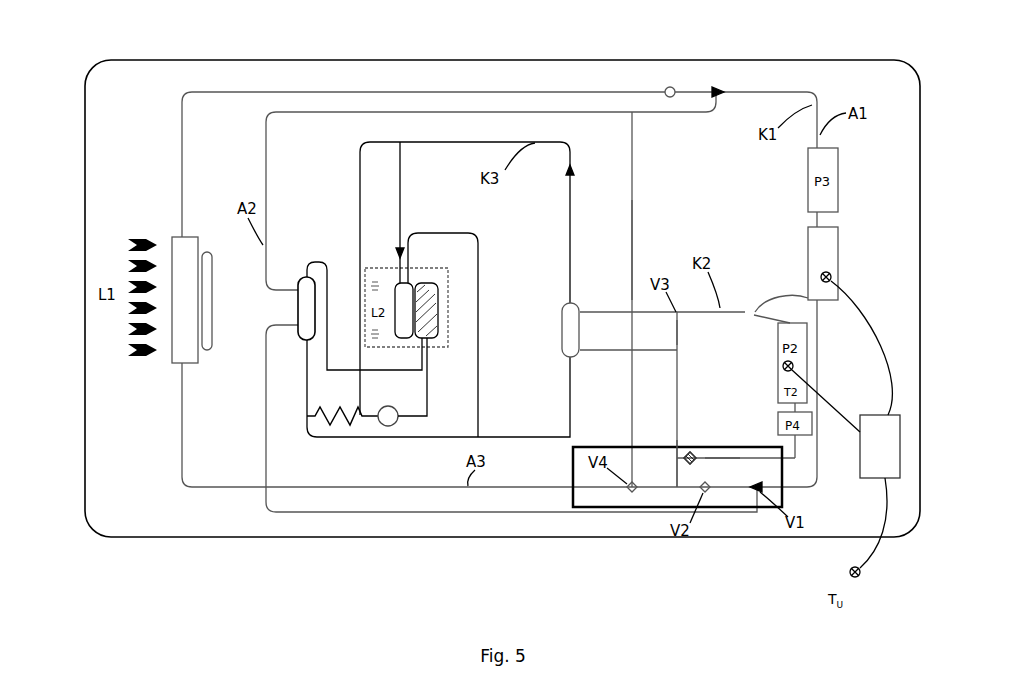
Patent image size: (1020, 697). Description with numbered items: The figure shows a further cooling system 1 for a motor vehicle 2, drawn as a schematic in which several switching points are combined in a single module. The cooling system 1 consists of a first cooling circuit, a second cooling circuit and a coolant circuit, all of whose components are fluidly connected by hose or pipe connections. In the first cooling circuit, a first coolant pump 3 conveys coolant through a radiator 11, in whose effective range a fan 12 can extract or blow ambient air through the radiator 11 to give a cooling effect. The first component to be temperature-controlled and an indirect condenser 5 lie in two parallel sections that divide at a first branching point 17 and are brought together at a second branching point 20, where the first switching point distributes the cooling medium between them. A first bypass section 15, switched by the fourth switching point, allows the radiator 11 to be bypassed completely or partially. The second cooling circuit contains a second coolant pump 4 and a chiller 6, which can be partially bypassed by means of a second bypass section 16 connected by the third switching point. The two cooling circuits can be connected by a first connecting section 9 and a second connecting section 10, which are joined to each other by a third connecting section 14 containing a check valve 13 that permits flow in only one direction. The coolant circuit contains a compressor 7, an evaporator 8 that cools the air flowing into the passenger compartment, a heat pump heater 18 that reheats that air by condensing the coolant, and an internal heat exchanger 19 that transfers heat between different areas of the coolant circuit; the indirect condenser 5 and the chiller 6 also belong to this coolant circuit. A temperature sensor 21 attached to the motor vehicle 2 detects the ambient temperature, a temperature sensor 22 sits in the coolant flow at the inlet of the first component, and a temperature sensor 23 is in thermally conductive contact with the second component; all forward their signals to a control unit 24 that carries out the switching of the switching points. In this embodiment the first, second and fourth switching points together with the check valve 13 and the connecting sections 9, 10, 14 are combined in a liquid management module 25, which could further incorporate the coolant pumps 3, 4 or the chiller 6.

The cooling system 1 is at (130, 86).
The motor vehicle 2 is at (152, 58).
The first coolant pump 3 is at (673, 86).
The second coolant pump 4 is at (835, 293).
The indirect condenser 5 is at (306, 308).
The chiller 6 is at (570, 330).
The compressor 7 is at (384, 427).
The evaporator 8 is at (404, 310).
The first connecting section 9 is at (710, 465).
The second connecting section 10 is at (672, 466).
The radiator 11 is at (185, 300).
The fan 12 is at (212, 305).
The check valve 13 is at (693, 453).
The third connecting section 14 is at (704, 460).
The first bypass section 15 is at (632, 263).
The second bypass section 16 is at (678, 333).
The first branching point 17 is at (724, 90).
The heat pump heater 18 is at (426, 310).
The internal heat exchanger 19 is at (313, 423).
The second branching point 20 is at (768, 483).
The temperature sensor 21 is at (860, 580).
The temperature sensor 22 is at (835, 277).
The temperature sensor 23 is at (798, 368).
The control unit 24 is at (846, 424).
The liquid management module 25 is at (586, 508).